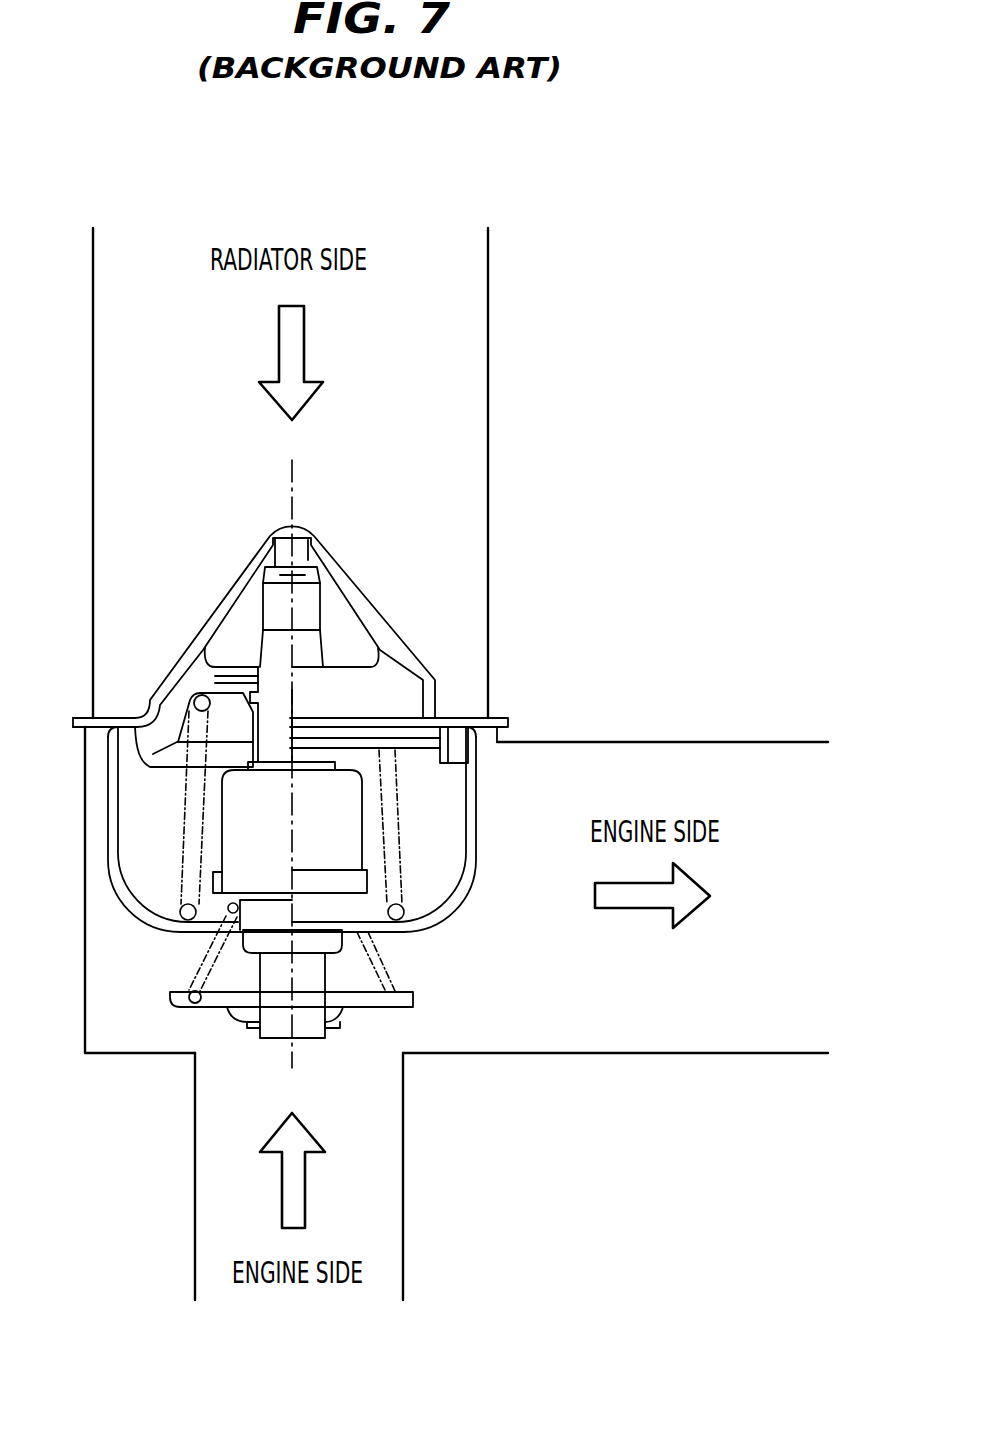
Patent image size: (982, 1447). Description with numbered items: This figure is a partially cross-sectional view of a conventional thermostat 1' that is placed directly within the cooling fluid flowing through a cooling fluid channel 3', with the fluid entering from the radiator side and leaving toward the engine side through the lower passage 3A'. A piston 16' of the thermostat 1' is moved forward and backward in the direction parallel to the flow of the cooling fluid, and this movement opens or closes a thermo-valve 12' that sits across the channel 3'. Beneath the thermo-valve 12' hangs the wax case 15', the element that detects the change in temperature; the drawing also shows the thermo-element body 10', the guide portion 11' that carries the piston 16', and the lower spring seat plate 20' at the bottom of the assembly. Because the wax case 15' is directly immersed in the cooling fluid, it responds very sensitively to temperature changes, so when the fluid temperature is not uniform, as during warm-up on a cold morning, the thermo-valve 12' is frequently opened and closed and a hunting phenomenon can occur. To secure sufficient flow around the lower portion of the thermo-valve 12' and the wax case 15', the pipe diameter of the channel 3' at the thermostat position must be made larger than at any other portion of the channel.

The cooling fluid channel 3' is at (450, 640).
The outlet passage 3A' is at (266, 1176).
The thermostat 1' is at (257, 612).
The piston 16' is at (263, 609).
The guide member 11' is at (260, 602).
The thermo-valve 12' is at (301, 677).
The thermo-element (wax case) 10' is at (290, 813).
The wax case 15' is at (176, 815).
The spring seat plate 20' is at (278, 1053).